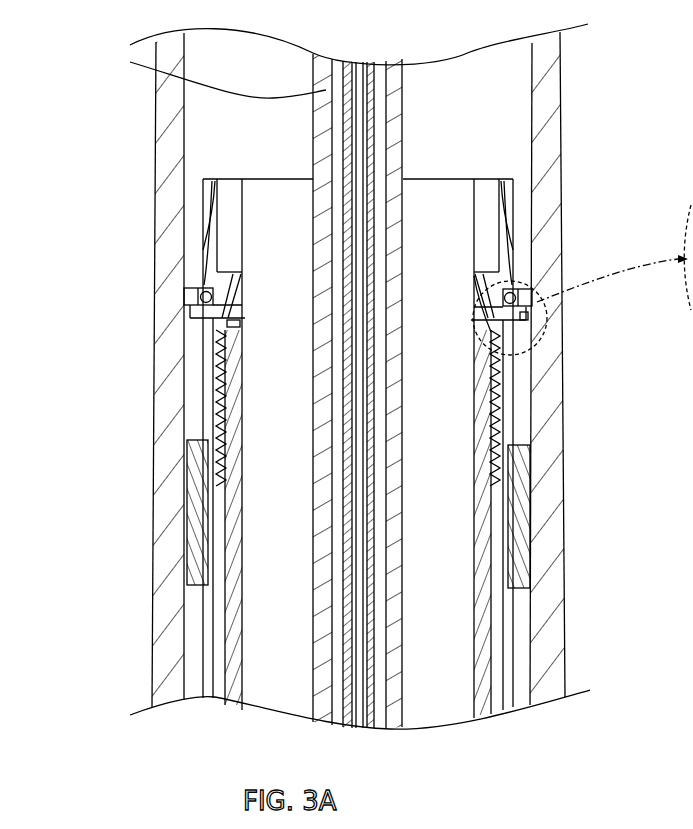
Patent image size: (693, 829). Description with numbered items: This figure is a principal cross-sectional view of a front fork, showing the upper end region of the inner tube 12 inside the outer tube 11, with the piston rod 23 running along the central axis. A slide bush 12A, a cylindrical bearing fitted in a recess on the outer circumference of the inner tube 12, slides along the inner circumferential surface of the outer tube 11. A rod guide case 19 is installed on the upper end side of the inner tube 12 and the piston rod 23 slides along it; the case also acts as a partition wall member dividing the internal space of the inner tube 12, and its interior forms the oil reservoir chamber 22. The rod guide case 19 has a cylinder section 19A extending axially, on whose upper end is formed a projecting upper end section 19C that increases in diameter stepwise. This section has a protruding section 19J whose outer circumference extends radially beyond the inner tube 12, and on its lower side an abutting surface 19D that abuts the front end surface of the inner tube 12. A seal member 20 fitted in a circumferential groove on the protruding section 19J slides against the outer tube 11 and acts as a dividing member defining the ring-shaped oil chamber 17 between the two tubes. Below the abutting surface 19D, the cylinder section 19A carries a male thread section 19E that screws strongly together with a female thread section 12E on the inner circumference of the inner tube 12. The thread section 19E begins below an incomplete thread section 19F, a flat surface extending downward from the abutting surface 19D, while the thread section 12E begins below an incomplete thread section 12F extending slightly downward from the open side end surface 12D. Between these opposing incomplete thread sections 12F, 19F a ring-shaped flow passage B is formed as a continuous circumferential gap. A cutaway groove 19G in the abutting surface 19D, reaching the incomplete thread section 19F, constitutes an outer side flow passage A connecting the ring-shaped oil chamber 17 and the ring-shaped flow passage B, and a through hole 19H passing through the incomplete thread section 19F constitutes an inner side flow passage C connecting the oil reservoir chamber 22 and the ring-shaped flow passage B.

The outer tube 11 is at (563, 72).
The piston rod 23 is at (320, 95).
The rod guide case 19 is at (513, 180).
The cylinder section 19A is at (480, 707).
The projecting upper end section 19C is at (512, 207).
The abutting surface 19D is at (528, 327).
The thread section 19E is at (518, 440).
The incomplete thread section 19F is at (532, 362).
The cutaway groove 19G is at (532, 312).
The through hole 19H is at (222, 326).
The protruding section 19J is at (530, 245).
The seal member 20 is at (185, 296).
The inner tube 12 is at (508, 598).
The slide bush 12A is at (192, 462).
The open side end surface 12D is at (195, 310).
The thread section 12E is at (503, 410).
The incomplete thread section 12F is at (528, 290).
The ring-shaped oil chamber 17 is at (524, 631).
The oil reservoir chamber 22 is at (440, 527).
The outer side flow passage A is at (532, 320).
The ring-shaped flow passage B is at (200, 335).
The inner side flow passage C is at (235, 323).